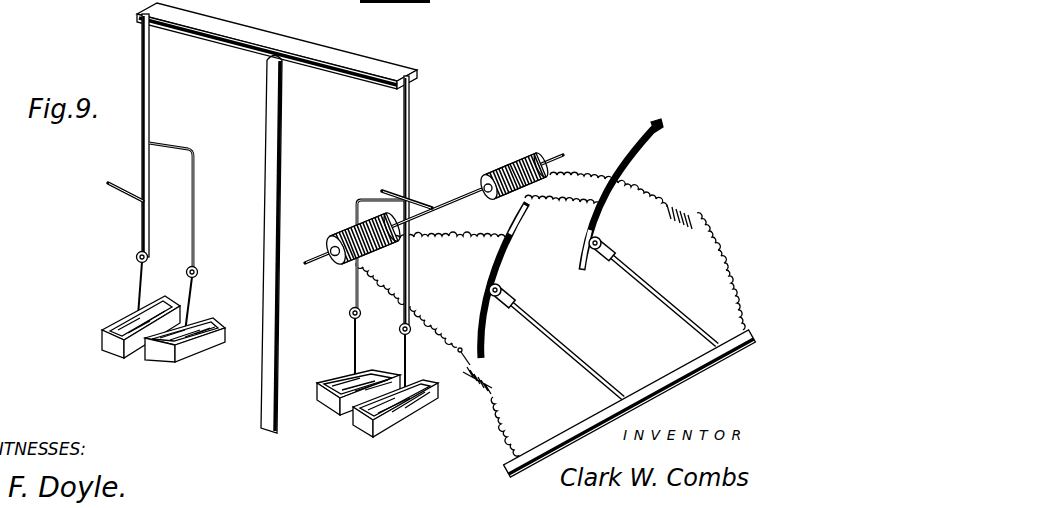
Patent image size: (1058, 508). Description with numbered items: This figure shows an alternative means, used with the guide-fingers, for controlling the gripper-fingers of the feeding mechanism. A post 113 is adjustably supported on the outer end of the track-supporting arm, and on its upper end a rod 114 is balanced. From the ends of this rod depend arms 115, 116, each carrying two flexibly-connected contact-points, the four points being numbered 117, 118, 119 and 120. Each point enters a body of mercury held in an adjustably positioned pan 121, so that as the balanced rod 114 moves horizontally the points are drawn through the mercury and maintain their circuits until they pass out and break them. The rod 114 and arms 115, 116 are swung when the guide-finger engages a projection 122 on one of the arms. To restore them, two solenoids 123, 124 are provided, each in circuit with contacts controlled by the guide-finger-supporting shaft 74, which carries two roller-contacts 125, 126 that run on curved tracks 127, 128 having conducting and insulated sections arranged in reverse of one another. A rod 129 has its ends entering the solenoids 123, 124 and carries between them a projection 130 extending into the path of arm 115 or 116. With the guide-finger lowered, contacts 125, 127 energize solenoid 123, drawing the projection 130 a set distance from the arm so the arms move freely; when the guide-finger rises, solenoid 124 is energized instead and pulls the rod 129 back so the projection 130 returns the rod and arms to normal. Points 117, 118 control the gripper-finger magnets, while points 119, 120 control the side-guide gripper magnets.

The shaft 74 is at (684, 386).
The post 113 is at (290, 245).
The rod 114 is at (277, 46).
The arm 115 is at (151, 99).
The arm 116 is at (404, 121).
The contact-point 117 is at (141, 287).
The contact-point 118 is at (207, 304).
The contact-point 119 is at (355, 345).
The contact-point 120 is at (405, 350).
The pan 121 is at (157, 354).
The projection 122 is at (120, 194).
The solenoid 123 is at (343, 233).
The solenoid 124 is at (515, 163).
The roller-contact 125 is at (506, 286).
The roller-contact 126 is at (601, 238).
The curved track 127 is at (486, 277).
The curved track 128 is at (618, 182).
The rod 129 is at (434, 209).
The projection 130 is at (388, 193).